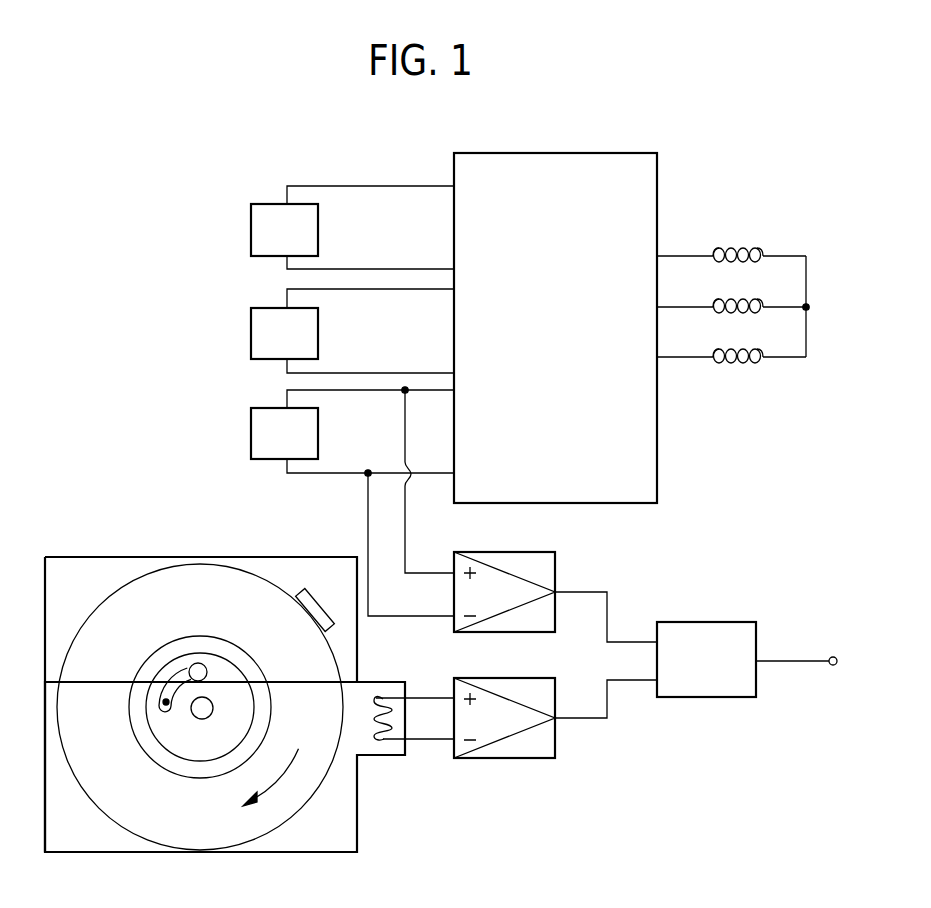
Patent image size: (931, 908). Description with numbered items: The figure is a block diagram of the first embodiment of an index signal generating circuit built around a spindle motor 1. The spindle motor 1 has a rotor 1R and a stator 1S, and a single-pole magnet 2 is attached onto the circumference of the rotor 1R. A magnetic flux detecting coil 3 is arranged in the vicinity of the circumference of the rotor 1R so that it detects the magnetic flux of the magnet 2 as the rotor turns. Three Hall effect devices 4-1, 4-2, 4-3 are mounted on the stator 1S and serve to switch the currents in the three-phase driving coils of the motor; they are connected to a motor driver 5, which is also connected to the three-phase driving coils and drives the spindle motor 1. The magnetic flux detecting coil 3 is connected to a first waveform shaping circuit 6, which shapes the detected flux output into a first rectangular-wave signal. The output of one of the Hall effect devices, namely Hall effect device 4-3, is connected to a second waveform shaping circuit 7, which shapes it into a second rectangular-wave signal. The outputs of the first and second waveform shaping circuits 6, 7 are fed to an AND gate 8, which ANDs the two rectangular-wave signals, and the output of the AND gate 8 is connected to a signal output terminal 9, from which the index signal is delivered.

The spindle motor 1 is at (249, 669).
The rotor 1R is at (238, 583).
The stator 1S is at (347, 830).
The magnet 2 is at (301, 590).
The magnetic flux detecting coil 3 is at (383, 740).
The Hall effect device 4-1 is at (251, 233).
The Hall effect device 4-2 is at (251, 335).
The Hall effect device 4-3 is at (251, 435).
The motor driver 5 is at (657, 172).
The first waveform shaping circuit 6 is at (518, 678).
The second waveform shaping circuit 7 is at (522, 552).
The AND gate 8 is at (722, 622).
The signal output terminal 9 is at (837, 661).